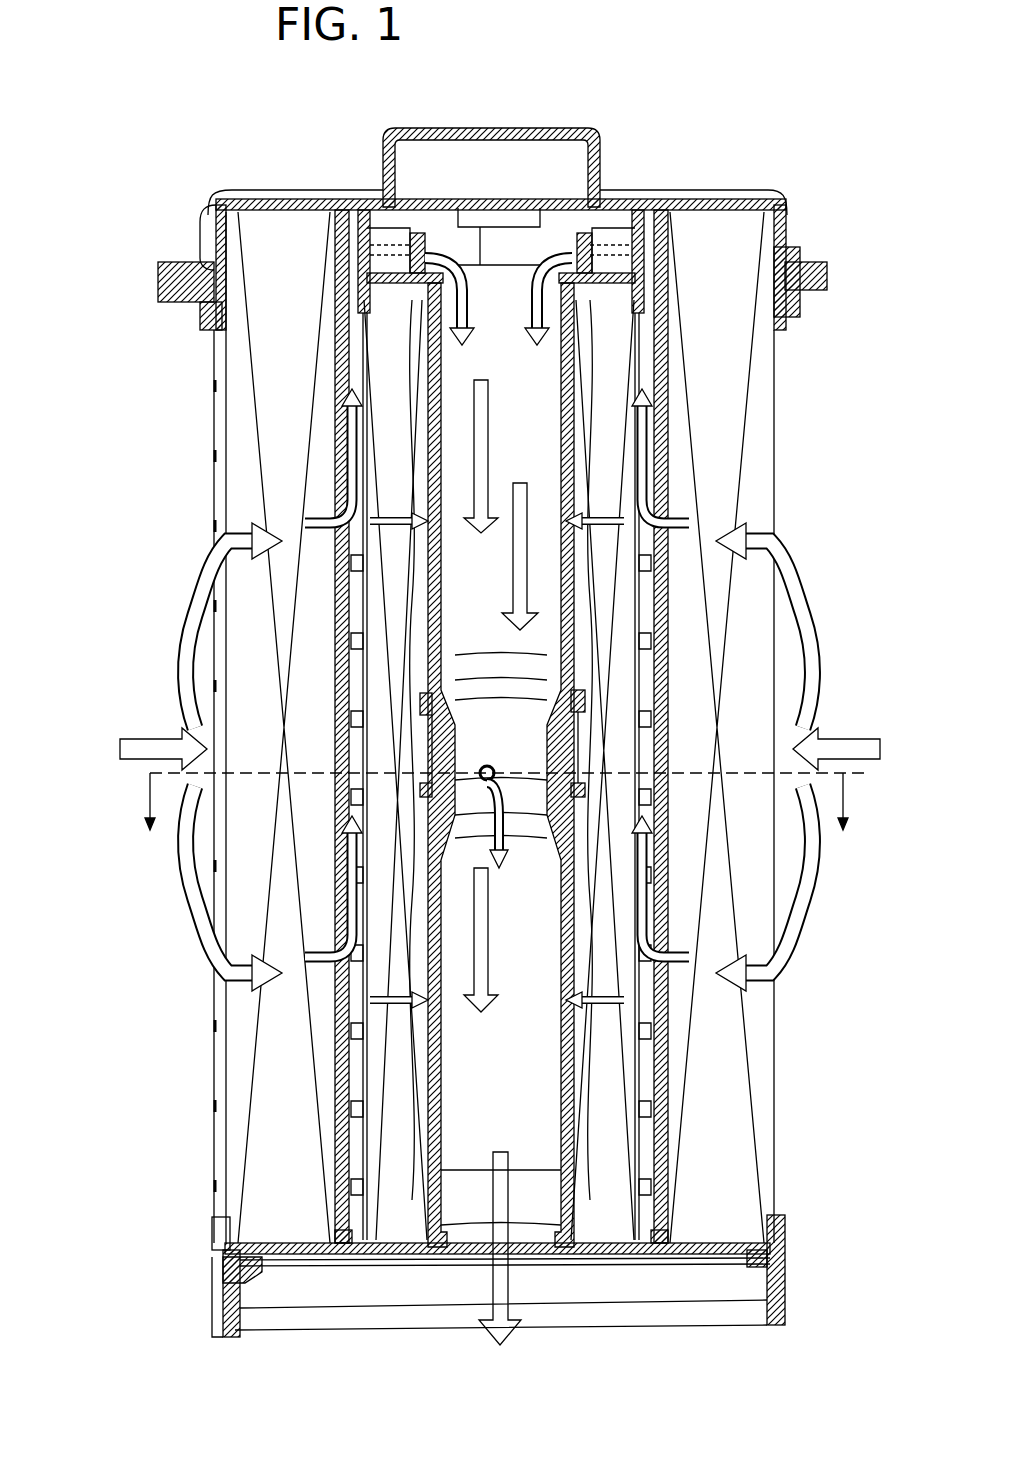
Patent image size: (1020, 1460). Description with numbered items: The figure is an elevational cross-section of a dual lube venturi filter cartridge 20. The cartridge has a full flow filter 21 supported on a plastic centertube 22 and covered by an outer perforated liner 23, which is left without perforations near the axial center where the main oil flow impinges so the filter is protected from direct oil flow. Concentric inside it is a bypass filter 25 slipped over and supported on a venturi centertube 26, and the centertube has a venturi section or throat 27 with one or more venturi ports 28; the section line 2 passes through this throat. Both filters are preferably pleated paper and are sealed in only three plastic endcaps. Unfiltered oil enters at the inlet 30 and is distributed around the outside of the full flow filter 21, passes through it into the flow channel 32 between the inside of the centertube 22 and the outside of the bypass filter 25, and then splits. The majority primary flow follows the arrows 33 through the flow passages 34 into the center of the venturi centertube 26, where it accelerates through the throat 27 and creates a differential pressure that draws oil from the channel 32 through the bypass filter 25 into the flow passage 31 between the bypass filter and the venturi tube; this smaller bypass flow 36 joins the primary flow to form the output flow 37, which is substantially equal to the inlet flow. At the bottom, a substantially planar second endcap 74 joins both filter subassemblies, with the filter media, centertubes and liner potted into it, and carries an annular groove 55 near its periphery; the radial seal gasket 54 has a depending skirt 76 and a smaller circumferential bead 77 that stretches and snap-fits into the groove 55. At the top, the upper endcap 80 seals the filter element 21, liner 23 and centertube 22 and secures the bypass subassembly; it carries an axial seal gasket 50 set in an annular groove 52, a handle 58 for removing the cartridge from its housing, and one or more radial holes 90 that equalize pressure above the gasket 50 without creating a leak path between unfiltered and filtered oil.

The section line 2- 2 is at (505, 821).
The cartridge 20 is at (100, 322).
The full flow filter 21 is at (776, 475).
The plastic centertube 22 is at (669, 212).
The outer perforated liner 23 is at (222, 400).
The bypass filter 25 is at (612, 362).
The venturi centertube 26 is at (437, 422).
The venturi section or throat 27 is at (600, 775).
The venturi ports 28 is at (483, 782).
The inlet of unfiltered oil 30 is at (156, 735).
The flow passage 31 is at (432, 730).
The flow channel 32 is at (363, 250).
The primary flow arrows 33 is at (525, 322).
The flow passages 34 is at (617, 232).
The bypass flow 36 is at (402, 512).
The output flow 37 is at (535, 1290).
The axial seal gasket 50 is at (830, 282).
The annular groove 52 is at (792, 262).
The radial seal gasket 54 is at (787, 1290).
The annular groove 55 is at (766, 1215).
The handle 58 is at (496, 126).
The second endcap 74 is at (628, 1254).
The depending skirt 76 is at (252, 1298).
The circumferential bead 77 is at (268, 1282).
The upper endcap 80 is at (204, 214).
The radial holes 90 is at (786, 213).